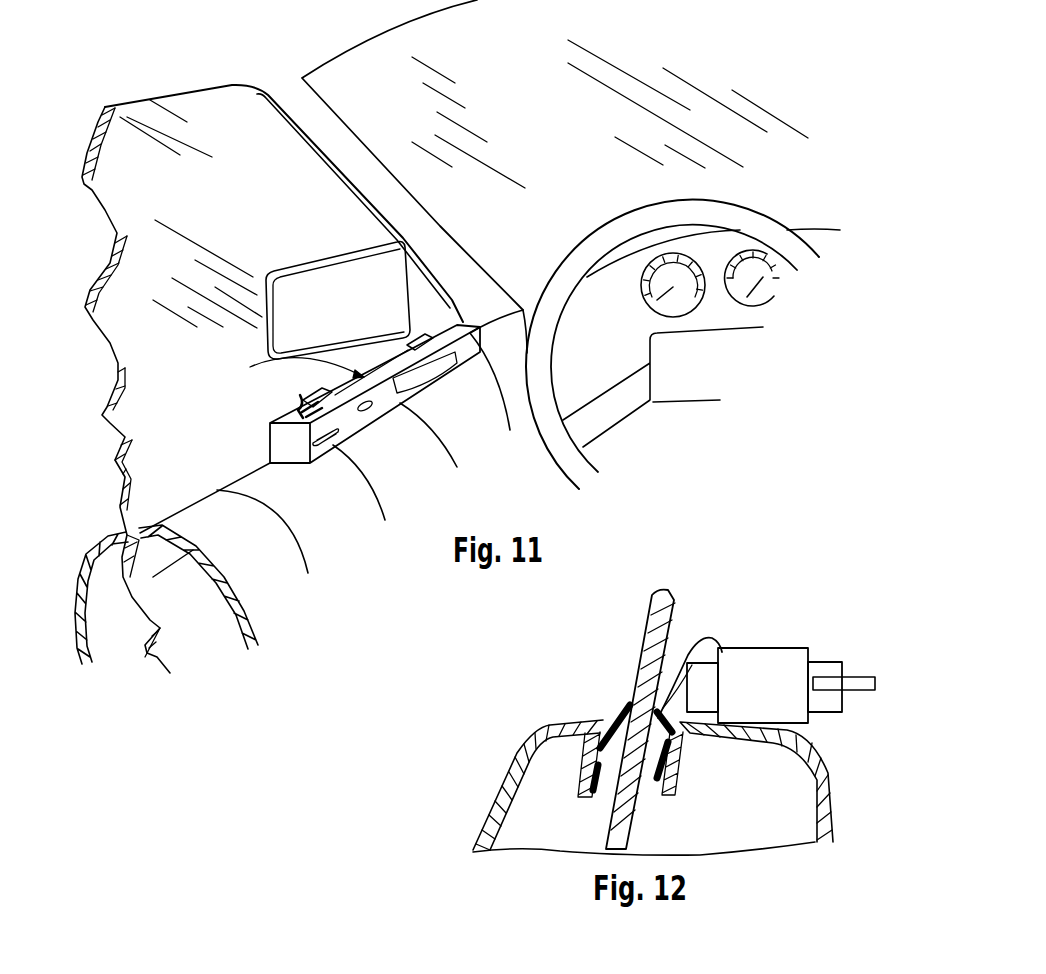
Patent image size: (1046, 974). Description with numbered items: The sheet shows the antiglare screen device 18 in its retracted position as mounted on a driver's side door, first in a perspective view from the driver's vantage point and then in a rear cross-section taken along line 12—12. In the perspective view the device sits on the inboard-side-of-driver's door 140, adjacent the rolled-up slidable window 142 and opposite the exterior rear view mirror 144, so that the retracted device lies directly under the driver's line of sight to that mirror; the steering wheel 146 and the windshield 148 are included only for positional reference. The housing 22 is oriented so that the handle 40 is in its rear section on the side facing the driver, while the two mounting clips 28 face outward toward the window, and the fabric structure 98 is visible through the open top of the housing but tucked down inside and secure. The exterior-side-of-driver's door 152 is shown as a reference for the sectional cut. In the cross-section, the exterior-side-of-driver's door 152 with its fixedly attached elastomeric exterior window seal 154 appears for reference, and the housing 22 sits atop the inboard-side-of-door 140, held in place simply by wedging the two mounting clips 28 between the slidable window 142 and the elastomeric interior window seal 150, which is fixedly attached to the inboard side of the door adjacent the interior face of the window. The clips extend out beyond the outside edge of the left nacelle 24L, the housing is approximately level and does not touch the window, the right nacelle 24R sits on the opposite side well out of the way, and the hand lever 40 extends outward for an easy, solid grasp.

In FIG. 11, the slidable window 142 is at (203, 92).
In FIG. 12, the slidable window 142 is at (650, 628).
In FIG. 11, the exterior rear view mirror 144 is at (340, 287).
In FIG. 11, the windshield 148 is at (788, 59).
In FIG. 11, the steering wheel 146 is at (775, 225).
In FIG. 11, the inboard-side-of-driver's door 140 is at (253, 543).
In FIG. 12, the inboard-side-of-driver's door 140 is at (833, 810).
In FIG. 11, the antiglare screen device 18 is at (373, 381).
In FIG. 12, the antiglare screen device 18 is at (779, 638).
In FIG. 11, the housing 22 is at (447, 378).
In FIG. 12, the housing 22 is at (770, 700).
In FIG. 11, the mounting clips 28 is at (423, 328).
In FIG. 12, the mounting clips 28 is at (700, 640).
In FIG. 11, the fabric structure 98 is at (295, 364).
In FIG. 11, the handle 40 is at (327, 447).
In FIG. 12, the handle 40 is at (865, 690).
In FIG. 11, the exterior-side-of-driver's door 152 is at (87, 557).
In FIG. 12, the exterior-side-of-driver's door 152 is at (487, 817).
In FIG. 11, the section line 12— 12 is at (105, 458).
In FIG. 12, the left nacelle 24L is at (703, 687).
In FIG. 12, the right nacelle 24R is at (837, 662).
In FIG. 12, the elastomeric exterior window seal 154 is at (617, 712).
In FIG. 12, the elastomeric interior window seal 150 is at (657, 790).